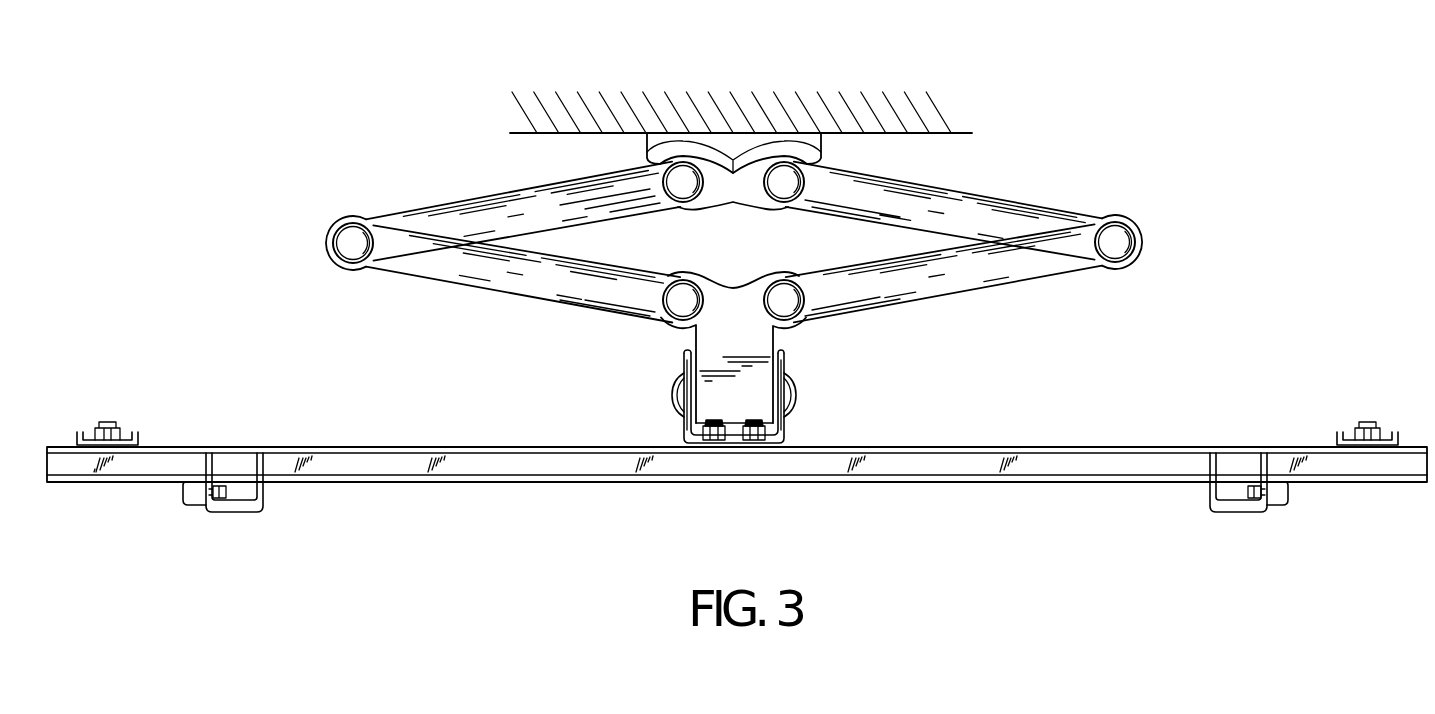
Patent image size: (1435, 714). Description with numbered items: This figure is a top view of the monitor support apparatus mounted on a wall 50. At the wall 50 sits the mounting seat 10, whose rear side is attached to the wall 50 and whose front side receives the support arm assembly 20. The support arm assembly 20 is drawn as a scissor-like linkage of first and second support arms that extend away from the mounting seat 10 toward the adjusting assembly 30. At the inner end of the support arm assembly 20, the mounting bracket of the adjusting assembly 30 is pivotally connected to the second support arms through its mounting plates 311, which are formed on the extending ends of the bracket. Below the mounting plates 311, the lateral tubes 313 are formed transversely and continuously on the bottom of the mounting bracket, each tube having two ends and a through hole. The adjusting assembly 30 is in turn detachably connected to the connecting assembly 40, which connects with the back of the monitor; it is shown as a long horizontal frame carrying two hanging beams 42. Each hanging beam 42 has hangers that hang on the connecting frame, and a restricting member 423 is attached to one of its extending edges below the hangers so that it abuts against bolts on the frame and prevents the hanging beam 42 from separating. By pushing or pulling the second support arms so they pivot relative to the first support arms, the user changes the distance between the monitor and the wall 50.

The wall 50 is at (909, 70).
The mounting seat 10 is at (820, 155).
The support arm assembly 20 is at (1078, 190).
The mounting plate 311 is at (748, 300).
The adjusting assembly 30 is at (746, 395).
The lateral tube 313 is at (713, 398).
The connecting assembly 40 is at (988, 523).
The hanging beam 42 is at (771, 532).
The restricting member 423 is at (1280, 488).